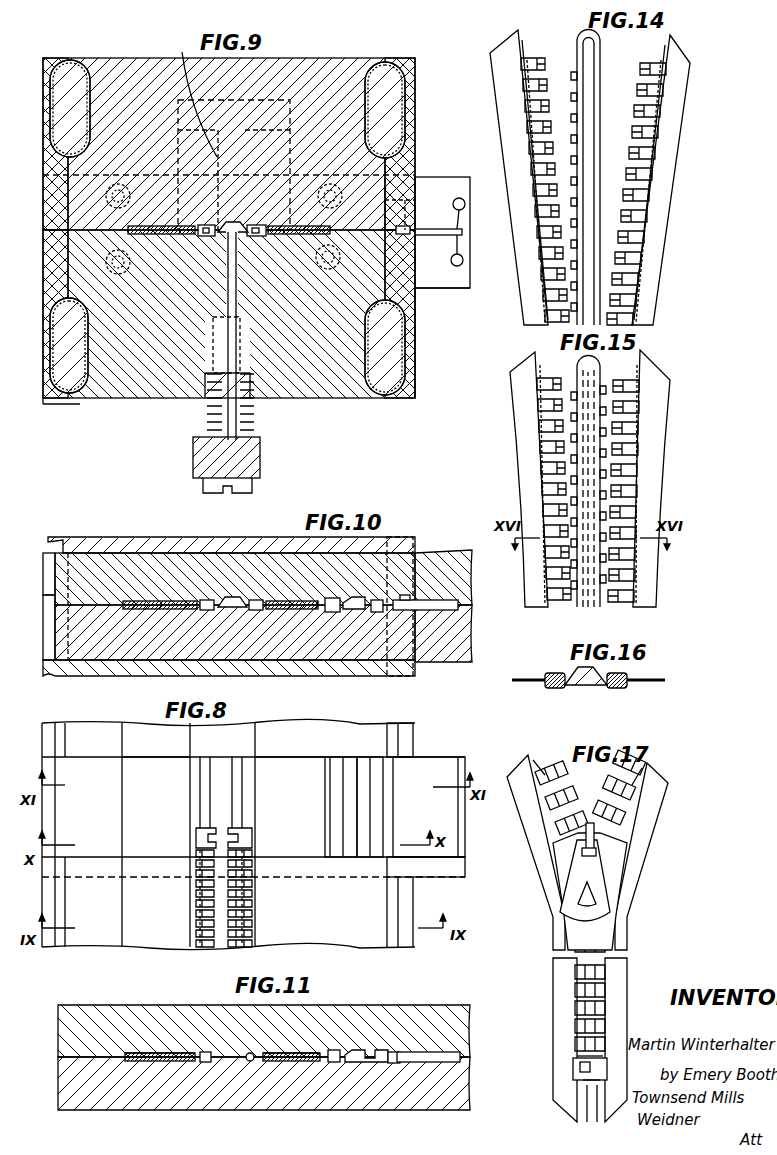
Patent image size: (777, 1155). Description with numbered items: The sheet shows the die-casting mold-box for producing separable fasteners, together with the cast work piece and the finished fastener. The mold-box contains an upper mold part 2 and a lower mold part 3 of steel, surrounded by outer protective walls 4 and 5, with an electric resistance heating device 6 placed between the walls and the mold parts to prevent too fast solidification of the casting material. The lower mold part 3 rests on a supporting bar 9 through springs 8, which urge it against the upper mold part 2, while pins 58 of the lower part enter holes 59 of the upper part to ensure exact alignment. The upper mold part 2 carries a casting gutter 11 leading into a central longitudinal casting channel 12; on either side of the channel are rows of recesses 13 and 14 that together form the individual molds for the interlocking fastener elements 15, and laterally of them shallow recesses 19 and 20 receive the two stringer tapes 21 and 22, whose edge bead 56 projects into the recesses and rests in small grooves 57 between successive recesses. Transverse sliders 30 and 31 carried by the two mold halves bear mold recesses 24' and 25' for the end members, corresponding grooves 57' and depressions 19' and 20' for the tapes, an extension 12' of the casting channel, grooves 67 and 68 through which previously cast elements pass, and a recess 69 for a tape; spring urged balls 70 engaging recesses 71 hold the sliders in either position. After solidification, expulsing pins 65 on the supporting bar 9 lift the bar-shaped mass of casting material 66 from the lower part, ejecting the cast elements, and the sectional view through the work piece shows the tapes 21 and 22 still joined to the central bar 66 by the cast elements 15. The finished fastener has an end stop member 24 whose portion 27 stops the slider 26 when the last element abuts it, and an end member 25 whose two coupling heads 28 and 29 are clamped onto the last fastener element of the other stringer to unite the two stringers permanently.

In FIG. 9, the upper mold part 2 is at (327, 63).
In FIG. 10, the upper mold part 2 is at (98, 543).
In FIG. 9, the lower mold part 3 is at (130, 398).
In FIG. 10, the lower mold part 3 is at (82, 670).
In FIG. 8, the lower mold part 3 is at (108, 938).
In FIG. 9, the outer protective wall 4 is at (50, 400).
In FIG. 9, the outer protective wall 5 is at (416, 281).
In FIG. 9, the electric resistance heating device 6 is at (68, 78).
In FIG. 9, the springs 8 is at (244, 428).
In FIG. 9, the supporting bar 9 is at (260, 461).
In FIG. 9, the casting gutter 11 is at (194, 95).
In FIG. 9, the casting channel 12 is at (263, 133).
In FIG. 10, the extension of the casting channel 12' is at (235, 559).
In FIG. 9, the recesses 13 is at (210, 237).
In FIG. 8, the recesses 13 is at (198, 893).
In FIG. 9, the recesses 14 is at (251, 237).
In FIG. 8, the recesses 14 is at (255, 894).
In FIG. 14, the interlocking fastener elements 15 is at (540, 125).
In FIG. 15, the interlocking fastener elements 15 is at (537, 413).
In FIG. 16, the interlocking fastener elements 15 is at (550, 689).
In FIG. 17, the interlocking fastener elements 15 is at (630, 790).
In FIG. 9, the shallow recess 19 is at (137, 335).
In FIG. 8, the shallow recess 19 is at (172, 848).
In FIG. 10, the depression 19' is at (152, 560).
In FIG. 8, the depression 19' is at (156, 749).
In FIG. 11, the depression 19' is at (160, 1016).
In FIG. 9, the shallow recess 20 is at (301, 340).
In FIG. 8, the shallow recess 20 is at (292, 848).
In FIG. 10, the depression 20' is at (288, 651).
In FIG. 8, the depression 20' is at (290, 745).
In FIG. 11, the depression 20' is at (306, 1016).
In FIG. 14, the stringer tape 21 is at (528, 309).
In FIG. 15, the stringer tape 21 is at (652, 598).
In FIG. 16, the stringer tape 21 is at (655, 672).
In FIG. 17, the stringer tape 21 is at (558, 983).
In FIG. 11, the stringer tape 21 is at (158, 1062).
In FIG. 14, the stringer tape 22 is at (643, 277).
In FIG. 15, the stringer tape 22 is at (537, 604).
In FIG. 16, the stringer tape 22 is at (523, 682).
In FIG. 17, the stringer tape 22 is at (625, 983).
In FIG. 11, the stringer tape 22 is at (278, 1062).
In FIG. 14, the end stop member 24 is at (495, 77).
In FIG. 15, the end stop member 24 is at (662, 366).
In FIG. 17, the end stop member 24 is at (525, 824).
In FIG. 10, the mold recess for end member 24' is at (195, 561).
In FIG. 8, the mold recess for end member 24' is at (184, 839).
In FIG. 14, the end member 25 is at (636, 79).
In FIG. 15, the end member 25 is at (506, 394).
In FIG. 17, the end member 25 is at (615, 1069).
In FIG. 10, the mold recess for end member 25' is at (267, 561).
In FIG. 8, the mold recess for end member 25' is at (262, 839).
In FIG. 17, the slider 26 is at (563, 858).
In FIG. 14, the portion of end stop member 27 is at (540, 63).
In FIG. 17, the portion of end stop member 27 is at (556, 796).
In FIG. 17, the coupling head 28 is at (577, 1062).
In FIG. 17, the coupling head 29 is at (580, 1080).
In FIG. 9, the slider 30 is at (432, 178).
In FIG. 10, the slider 30 is at (438, 558).
In FIG. 11, the slider 30 is at (466, 1032).
In FIG. 9, the slider 31 is at (437, 232).
In FIG. 10, the slider 31 is at (437, 653).
In FIG. 8, the slider 31 is at (465, 851).
In FIG. 11, the slider 31 is at (460, 1101).
In FIG. 14, the edge bead 56 is at (527, 97).
In FIG. 15, the edge bead 56 is at (542, 445).
In FIG. 17, the edge bead 56 is at (536, 768).
In FIG. 8, the longitudinal grooves 57 is at (197, 898).
In FIG. 8, the grooves 57' is at (199, 793).
In FIG. 9, the pins 58 is at (360, 207).
In FIG. 9, the holes 59 is at (405, 176).
In FIG. 9, the expulsing pins 65 is at (223, 348).
In FIG. 14, the bar-shaped mass of casting material 66 is at (618, 101).
In FIG. 15, the bar-shaped mass of casting material 66 is at (585, 437).
In FIG. 16, the bar-shaped mass of casting material 66 is at (586, 688).
In FIG. 10, the groove 67 is at (323, 612).
In FIG. 8, the groove 67 is at (333, 782).
In FIG. 11, the groove 67 is at (328, 1063).
In FIG. 10, the groove 68 is at (375, 613).
In FIG. 8, the groove 68 is at (373, 805).
In FIG. 11, the groove 68 is at (382, 1063).
In FIG. 10, the recess 69 is at (450, 602).
In FIG. 8, the recess 69 is at (415, 767).
In FIG. 11, the recess 69 is at (420, 1053).
In FIG. 9, the spring urged balls 70 is at (127, 190).
In FIG. 9, the recesses 71 is at (252, 224).